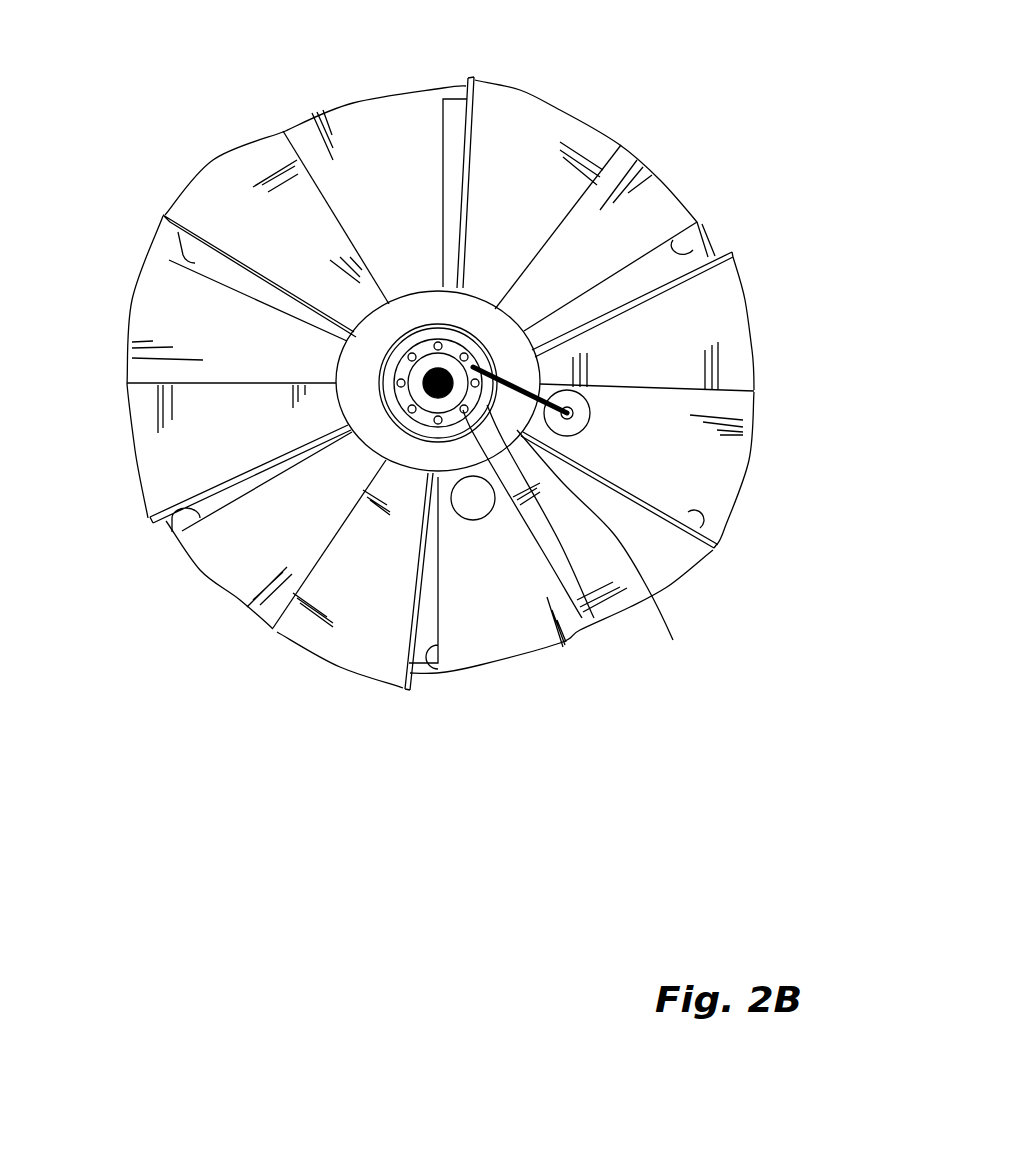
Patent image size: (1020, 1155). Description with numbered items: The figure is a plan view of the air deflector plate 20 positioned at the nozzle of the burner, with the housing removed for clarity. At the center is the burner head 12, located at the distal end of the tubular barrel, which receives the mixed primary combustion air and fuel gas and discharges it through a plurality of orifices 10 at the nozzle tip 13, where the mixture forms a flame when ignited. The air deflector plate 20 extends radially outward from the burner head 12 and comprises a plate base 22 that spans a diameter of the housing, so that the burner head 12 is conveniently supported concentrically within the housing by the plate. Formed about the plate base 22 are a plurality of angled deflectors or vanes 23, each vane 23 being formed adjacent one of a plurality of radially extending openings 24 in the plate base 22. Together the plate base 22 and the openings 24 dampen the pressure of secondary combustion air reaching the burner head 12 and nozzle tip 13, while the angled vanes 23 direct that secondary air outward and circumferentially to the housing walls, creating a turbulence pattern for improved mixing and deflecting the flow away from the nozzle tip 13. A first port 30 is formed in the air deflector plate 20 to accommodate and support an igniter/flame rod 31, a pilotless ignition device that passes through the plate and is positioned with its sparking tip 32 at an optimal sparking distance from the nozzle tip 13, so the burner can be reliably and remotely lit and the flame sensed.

The orifices 10 is at (440, 418).
The burner head 12 is at (422, 342).
The nozzle tip 13 is at (418, 386).
The air deflector plate 20 is at (706, 121).
The plate base 22 is at (401, 196).
The angled vanes 23 is at (530, 191).
The radially extending openings 24 is at (185, 250).
The first port 30 is at (590, 407).
The igniter/flame rod 31 is at (543, 378).
The sparking tip 32 is at (457, 340).